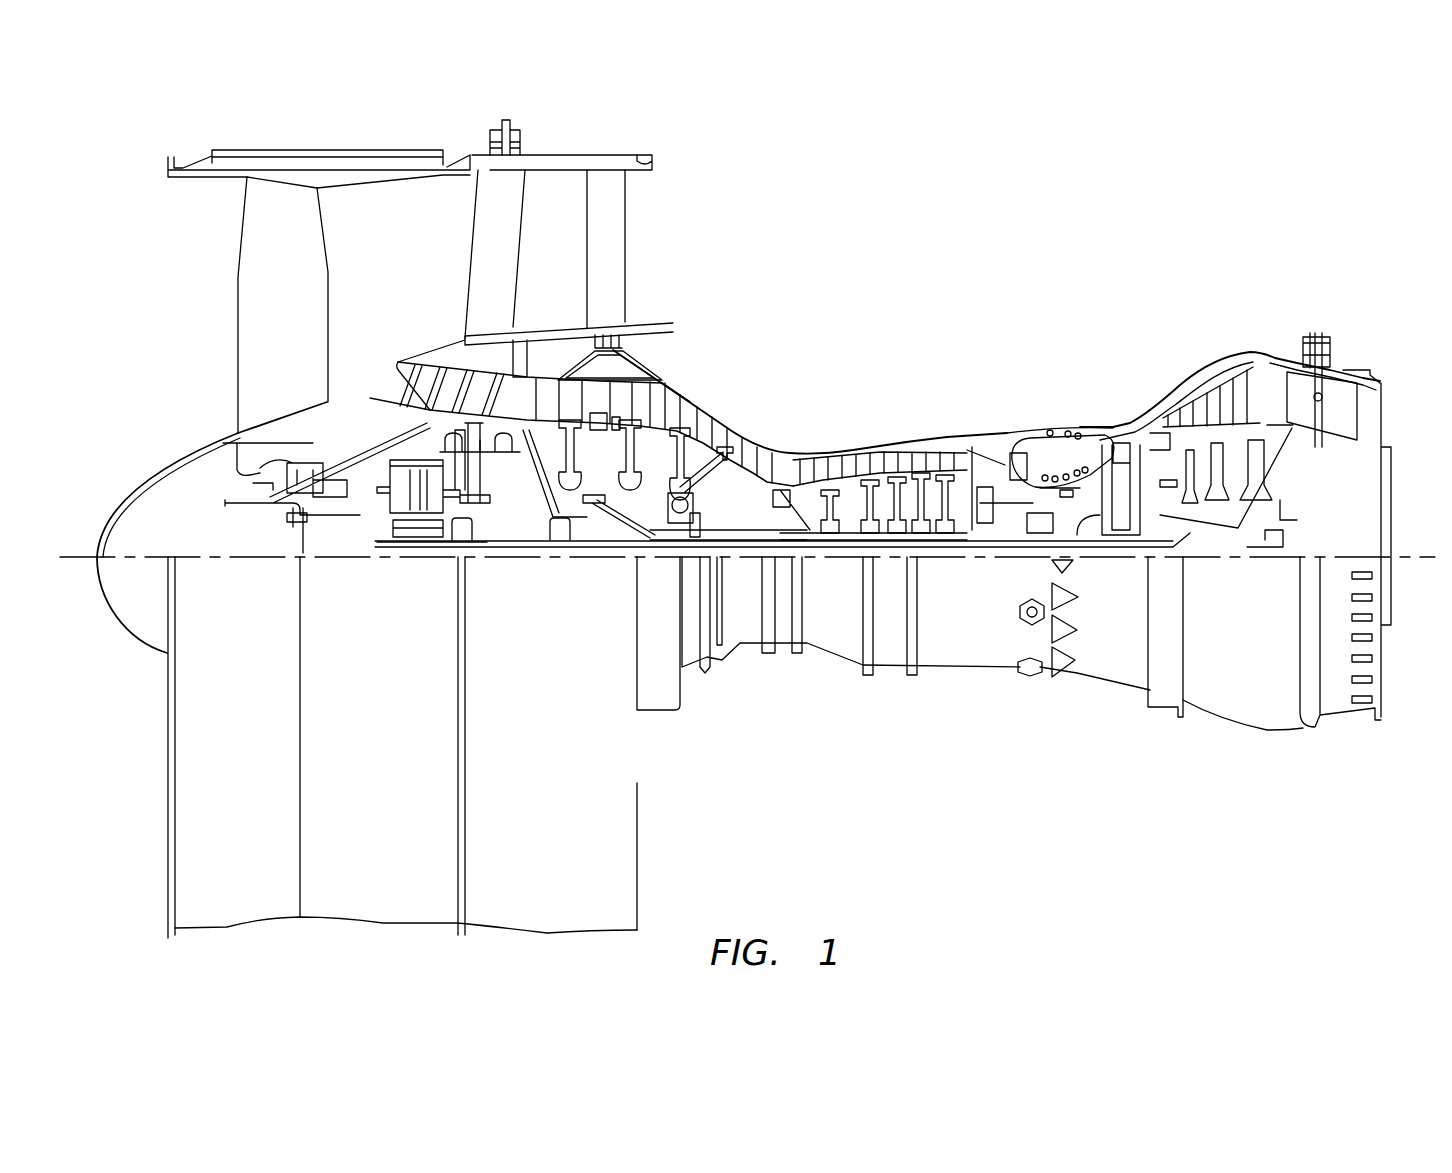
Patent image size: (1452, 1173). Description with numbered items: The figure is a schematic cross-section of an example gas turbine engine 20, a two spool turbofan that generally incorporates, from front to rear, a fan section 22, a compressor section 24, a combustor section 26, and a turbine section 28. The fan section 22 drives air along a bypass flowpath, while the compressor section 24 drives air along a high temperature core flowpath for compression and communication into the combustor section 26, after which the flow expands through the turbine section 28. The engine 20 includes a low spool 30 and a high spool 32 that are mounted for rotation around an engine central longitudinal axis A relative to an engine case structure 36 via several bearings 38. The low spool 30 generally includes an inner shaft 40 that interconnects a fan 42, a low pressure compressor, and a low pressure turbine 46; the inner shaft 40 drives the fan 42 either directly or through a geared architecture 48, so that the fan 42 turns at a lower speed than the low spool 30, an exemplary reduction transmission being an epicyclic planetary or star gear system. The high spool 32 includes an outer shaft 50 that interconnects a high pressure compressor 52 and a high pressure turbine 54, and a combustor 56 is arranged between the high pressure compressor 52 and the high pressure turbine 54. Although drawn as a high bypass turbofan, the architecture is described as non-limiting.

The gas turbine engine 20 is at (1105, 212).
The fan section 22 is at (463, 145).
The compressor section 24 is at (655, 403).
The combustor section 26 is at (1053, 297).
The turbine section 28 is at (1053, 297).
The low spool 30 is at (720, 512).
The high spool 32 is at (950, 513).
The engine case structure 36 is at (888, 672).
The bearings 38 is at (497, 633).
The inner shaft 40 is at (1083, 543).
The fan 42 is at (300, 364).
The low pressure turbine 46 is at (1263, 327).
The geared architecture 48 is at (418, 505).
The outer shaft 50 is at (1080, 513).
The high pressure compressor 52 is at (883, 510).
The high pressure turbine 54 is at (1120, 450).
The combustor 56 is at (1057, 461).
The engine central longitudinal axis A is at (1412, 557).